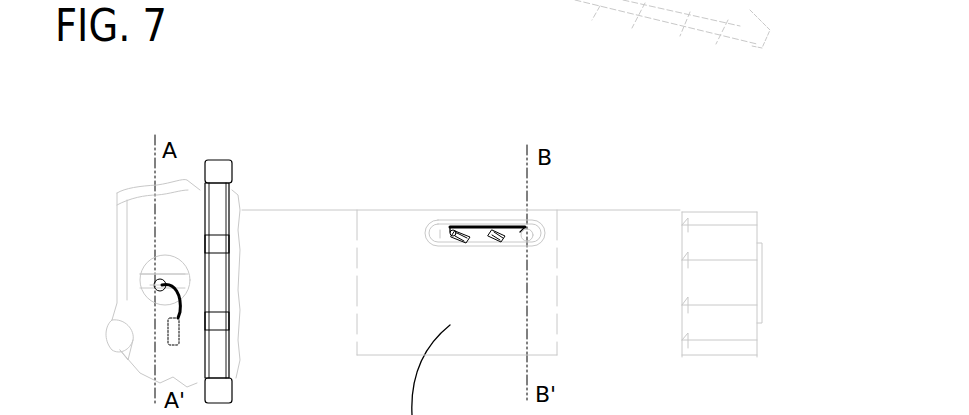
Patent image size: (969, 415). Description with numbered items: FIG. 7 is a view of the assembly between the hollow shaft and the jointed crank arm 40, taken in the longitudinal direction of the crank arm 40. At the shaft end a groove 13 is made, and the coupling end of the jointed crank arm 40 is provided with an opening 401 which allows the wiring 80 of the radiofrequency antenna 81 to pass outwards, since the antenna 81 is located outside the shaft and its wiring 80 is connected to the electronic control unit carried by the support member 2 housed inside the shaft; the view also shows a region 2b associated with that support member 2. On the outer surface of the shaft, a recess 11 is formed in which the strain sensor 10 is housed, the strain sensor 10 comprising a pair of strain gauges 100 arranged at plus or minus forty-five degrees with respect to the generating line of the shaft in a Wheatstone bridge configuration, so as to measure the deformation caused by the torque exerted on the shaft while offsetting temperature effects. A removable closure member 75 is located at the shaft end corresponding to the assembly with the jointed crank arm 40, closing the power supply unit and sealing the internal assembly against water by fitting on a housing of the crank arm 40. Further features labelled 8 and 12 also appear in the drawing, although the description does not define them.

The support member 2 is at (450, 0).
The housing opening 2b is at (158, 288).
The cover 8 is at (677, 0).
The strain sensor 10 is at (493, 212).
The recess 11 is at (427, 220).
The hole 12 is at (524, 232).
The groove 13 is at (152, 274).
The jointed crank arm 40 is at (190, 203).
The opening 401 is at (170, 258).
The removable closure member 75 is at (112, 333).
The wiring 80 is at (180, 300).
The radiofrequency antenna 81 is at (177, 330).
The strain gauges 100 is at (502, 243).